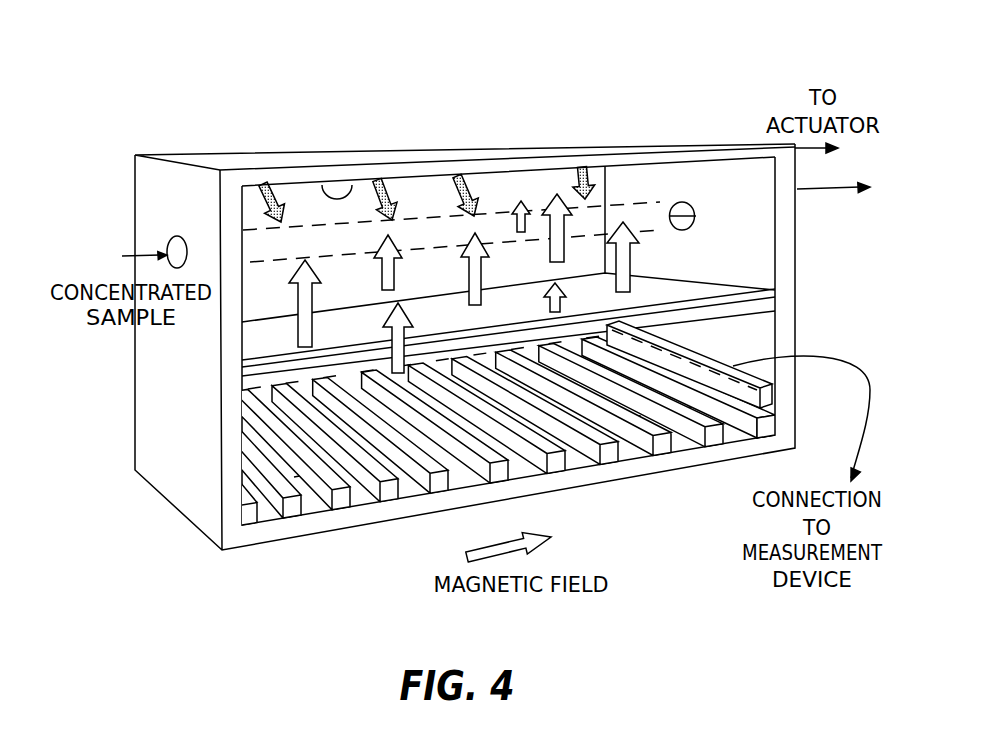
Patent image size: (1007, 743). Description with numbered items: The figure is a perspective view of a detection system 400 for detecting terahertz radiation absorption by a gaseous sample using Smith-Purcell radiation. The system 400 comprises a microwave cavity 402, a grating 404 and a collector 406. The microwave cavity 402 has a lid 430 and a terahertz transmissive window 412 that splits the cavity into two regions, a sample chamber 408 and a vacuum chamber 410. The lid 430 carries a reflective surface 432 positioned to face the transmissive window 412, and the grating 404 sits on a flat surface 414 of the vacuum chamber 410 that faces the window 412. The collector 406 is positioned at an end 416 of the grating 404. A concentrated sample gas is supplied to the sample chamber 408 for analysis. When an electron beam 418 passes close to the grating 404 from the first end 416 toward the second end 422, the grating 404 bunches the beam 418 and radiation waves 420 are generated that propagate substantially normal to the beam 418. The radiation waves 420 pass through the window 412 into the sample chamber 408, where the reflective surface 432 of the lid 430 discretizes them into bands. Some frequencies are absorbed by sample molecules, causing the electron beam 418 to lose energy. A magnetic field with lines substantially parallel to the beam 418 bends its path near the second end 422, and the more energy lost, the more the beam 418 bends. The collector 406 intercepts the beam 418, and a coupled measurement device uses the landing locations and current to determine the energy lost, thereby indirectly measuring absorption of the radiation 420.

The detection system 400 is at (198, 88).
The microwave cavity 402 is at (164, 356).
The grating 404 is at (766, 426).
The collector 406 is at (689, 364).
The sample chamber 408 is at (748, 221).
The vacuum chamber 410 is at (748, 322).
The terahertz transmissive window 412 is at (707, 287).
The flat surface 414 is at (466, 423).
The first end 416 is at (207, 463).
The electron beam 418 is at (700, 367).
The radiation waves 420 is at (527, 194).
The second end 422 is at (756, 437).
The lid 430 is at (228, 163).
The reflective surface 432 is at (350, 190).